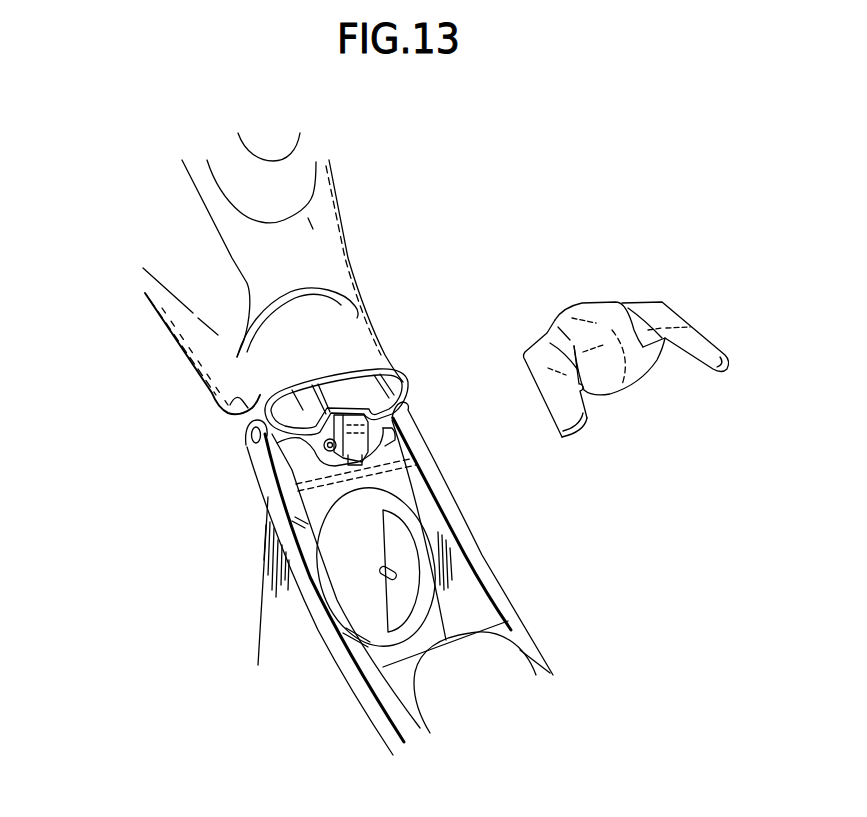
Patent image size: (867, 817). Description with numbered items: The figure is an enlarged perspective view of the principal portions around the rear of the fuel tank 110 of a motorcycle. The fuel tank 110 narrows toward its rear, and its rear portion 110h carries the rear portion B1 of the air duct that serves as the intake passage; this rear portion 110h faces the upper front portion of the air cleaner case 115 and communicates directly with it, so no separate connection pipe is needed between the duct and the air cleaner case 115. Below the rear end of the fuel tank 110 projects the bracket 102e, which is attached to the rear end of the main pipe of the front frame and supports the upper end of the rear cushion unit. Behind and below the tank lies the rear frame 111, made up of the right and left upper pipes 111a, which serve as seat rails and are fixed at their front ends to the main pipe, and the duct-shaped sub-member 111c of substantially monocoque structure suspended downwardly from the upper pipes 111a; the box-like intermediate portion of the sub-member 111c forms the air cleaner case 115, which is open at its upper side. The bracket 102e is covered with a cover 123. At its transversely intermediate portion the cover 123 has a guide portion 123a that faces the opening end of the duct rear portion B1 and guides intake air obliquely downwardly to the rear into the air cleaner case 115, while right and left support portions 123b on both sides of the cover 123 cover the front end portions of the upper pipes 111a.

The fuel tank 110 is at (333, 243).
The rear portion of the tank 110h is at (377, 360).
The rear portion of the duct B1 is at (388, 397).
The bracket 102e is at (385, 441).
The rear frame 111 is at (276, 635).
The upper pipes 111a is at (272, 493).
The sub-member 111c is at (272, 653).
The air cleaner case 115 is at (478, 611).
The cover 123 is at (598, 316).
The guide portion 123a is at (628, 392).
The support portions 123b is at (702, 344).